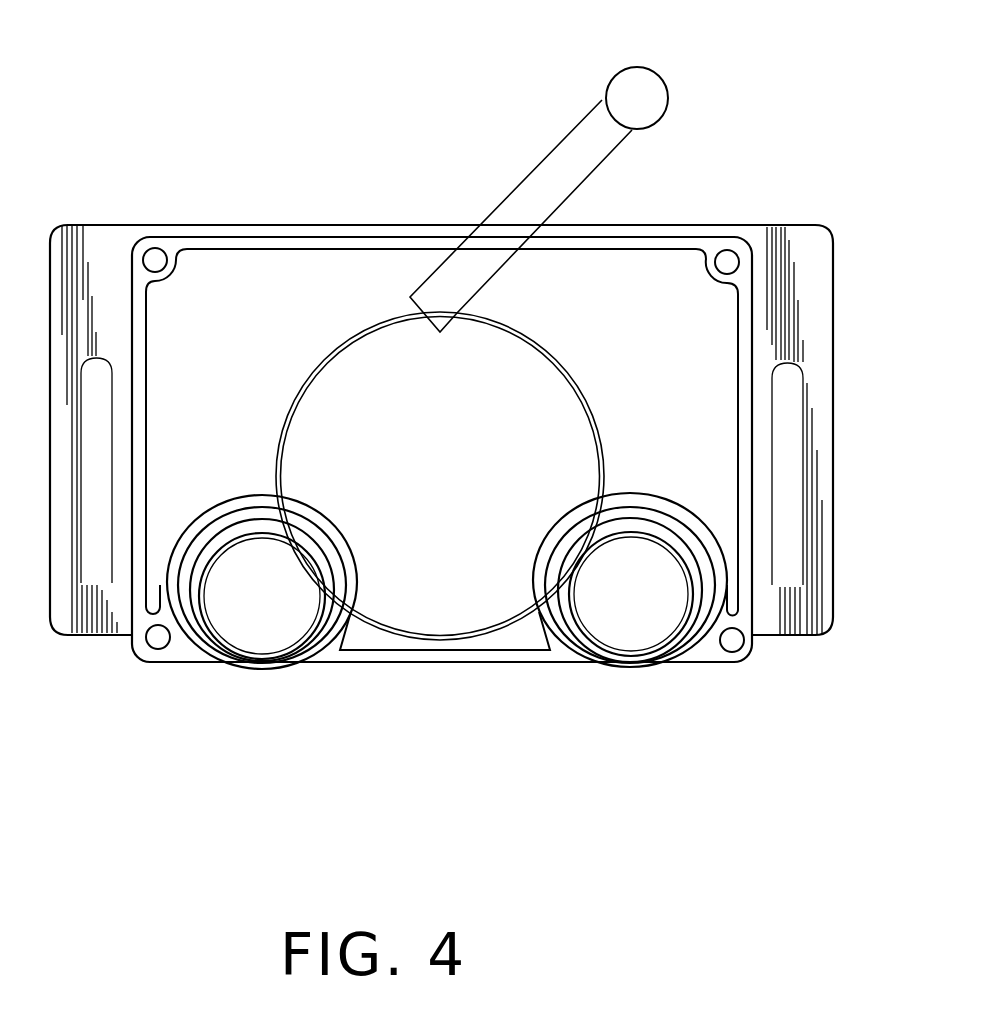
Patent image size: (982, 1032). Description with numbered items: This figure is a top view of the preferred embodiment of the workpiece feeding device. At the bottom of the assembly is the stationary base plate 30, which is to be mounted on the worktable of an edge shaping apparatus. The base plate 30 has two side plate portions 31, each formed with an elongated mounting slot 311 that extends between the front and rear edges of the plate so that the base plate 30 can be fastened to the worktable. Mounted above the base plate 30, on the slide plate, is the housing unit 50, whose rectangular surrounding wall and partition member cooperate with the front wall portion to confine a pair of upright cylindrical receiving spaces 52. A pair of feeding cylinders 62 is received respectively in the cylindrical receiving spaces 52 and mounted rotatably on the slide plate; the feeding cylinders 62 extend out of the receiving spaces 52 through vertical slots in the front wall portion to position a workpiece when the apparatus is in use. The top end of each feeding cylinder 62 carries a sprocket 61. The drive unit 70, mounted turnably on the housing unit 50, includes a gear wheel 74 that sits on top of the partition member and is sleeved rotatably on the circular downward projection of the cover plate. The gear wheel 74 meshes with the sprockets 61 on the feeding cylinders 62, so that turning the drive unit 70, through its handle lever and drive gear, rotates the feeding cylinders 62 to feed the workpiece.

The stationary base plate 30 is at (834, 292).
The side plate portions 31 is at (831, 612).
The elongated mounting slot 311 is at (790, 560).
The housing unit 50 is at (752, 288).
The cylindrical receiving spaces 52 is at (207, 655).
The sprocket 61 is at (296, 640).
The feeding cylinders 62 is at (265, 665).
The drive unit 70 is at (567, 130).
The gear wheel 74 is at (355, 368).